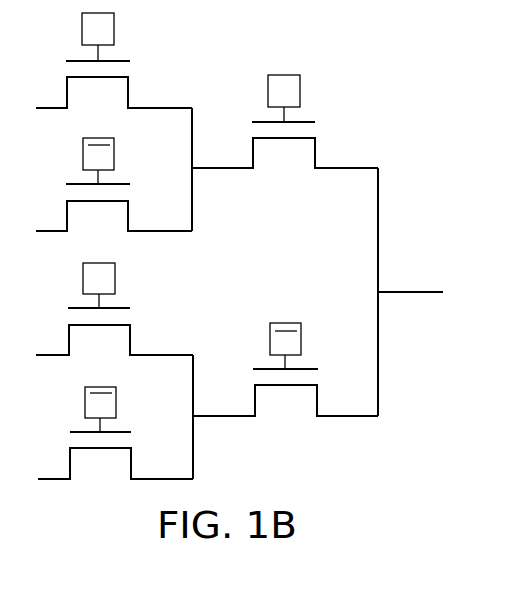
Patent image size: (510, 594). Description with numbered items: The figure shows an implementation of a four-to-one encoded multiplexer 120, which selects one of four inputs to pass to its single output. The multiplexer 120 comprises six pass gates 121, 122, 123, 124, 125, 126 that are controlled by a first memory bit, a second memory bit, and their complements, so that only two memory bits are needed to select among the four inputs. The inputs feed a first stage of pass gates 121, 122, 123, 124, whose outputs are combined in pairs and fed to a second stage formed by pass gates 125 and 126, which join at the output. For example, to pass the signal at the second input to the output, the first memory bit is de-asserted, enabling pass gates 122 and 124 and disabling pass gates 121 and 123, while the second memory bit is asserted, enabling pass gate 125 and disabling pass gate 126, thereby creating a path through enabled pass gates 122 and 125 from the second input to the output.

The 4-to-1 encoded multiplexer 120 is at (379, 22).
The pass gate 121 is at (114, 60).
The pass gate 122 is at (114, 184).
The pass gate 123 is at (114, 309).
The pass gate 124 is at (115, 433).
The pass gate 125 is at (285, 121).
The pass gate 126 is at (285, 369).